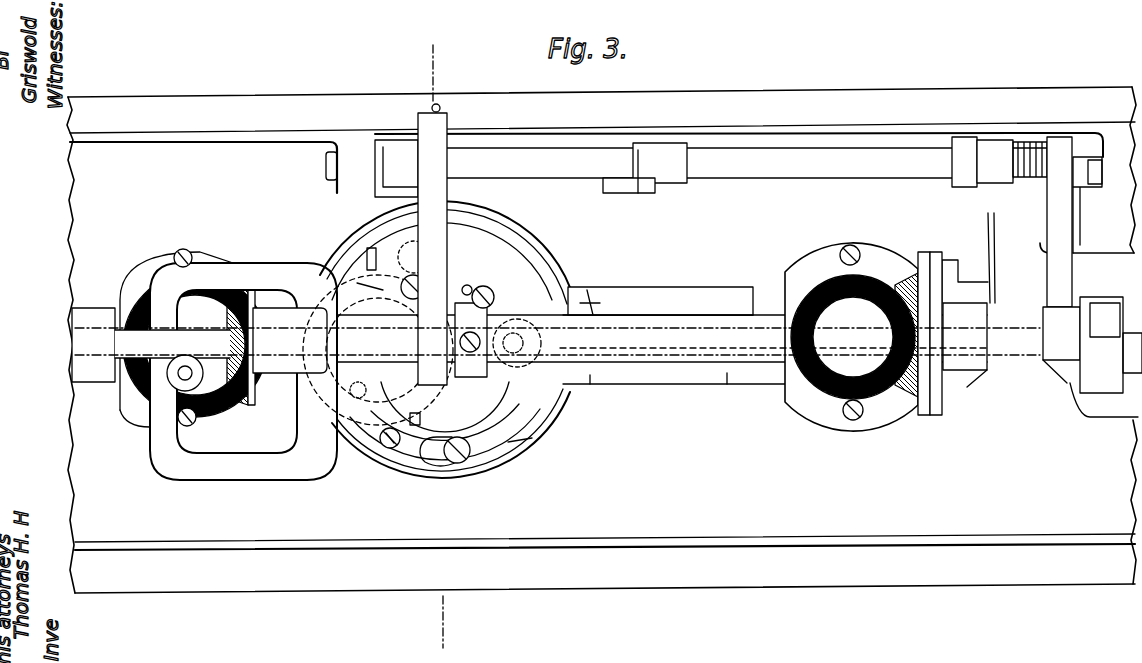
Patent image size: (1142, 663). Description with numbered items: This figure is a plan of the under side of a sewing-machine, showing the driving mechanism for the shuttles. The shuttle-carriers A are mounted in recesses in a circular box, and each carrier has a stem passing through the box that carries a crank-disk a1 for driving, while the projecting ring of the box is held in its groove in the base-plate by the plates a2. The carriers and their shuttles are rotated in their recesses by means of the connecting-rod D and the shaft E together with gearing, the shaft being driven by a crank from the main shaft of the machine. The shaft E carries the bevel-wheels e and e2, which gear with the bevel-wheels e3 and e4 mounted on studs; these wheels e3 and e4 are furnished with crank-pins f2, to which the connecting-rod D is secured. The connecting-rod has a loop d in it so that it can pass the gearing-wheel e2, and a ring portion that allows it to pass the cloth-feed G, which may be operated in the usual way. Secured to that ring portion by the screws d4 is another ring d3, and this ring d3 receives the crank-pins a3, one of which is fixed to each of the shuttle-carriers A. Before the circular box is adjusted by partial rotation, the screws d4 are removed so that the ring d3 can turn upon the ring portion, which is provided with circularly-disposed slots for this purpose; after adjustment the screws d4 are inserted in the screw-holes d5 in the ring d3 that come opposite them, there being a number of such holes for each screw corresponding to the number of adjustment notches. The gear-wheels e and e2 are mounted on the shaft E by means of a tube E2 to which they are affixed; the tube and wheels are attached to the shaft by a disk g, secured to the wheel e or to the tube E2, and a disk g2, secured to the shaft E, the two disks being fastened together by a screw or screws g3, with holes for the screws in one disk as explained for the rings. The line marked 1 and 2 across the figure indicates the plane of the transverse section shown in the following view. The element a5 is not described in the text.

The section line 1 is at (441, 71).
The section line 2 is at (451, 622).
The cloth-feed G is at (432, 249).
The loop d is at (228, 364).
The ring d3 is at (443, 362).
The screws d4 is at (495, 300).
The screw-holes d5 is at (470, 287).
The crank-disk a1 is at (447, 233).
The plates a2 is at (548, 288).
The crank-pins a3 is at (455, 483).
The pin a5 is at (601, 302).
The shuttle-carriers A is at (425, 353).
The bevel-wheel e2 is at (254, 392).
The bevel-wheel e4 is at (195, 345).
The connecting-rod D is at (482, 356).
The crank-pins f2 is at (178, 378).
The shaft E is at (734, 357).
The tube E2 is at (655, 362).
The bevel-wheel e3 is at (851, 337).
The bevel-wheel e is at (913, 400).
The disk g is at (925, 416).
The disk g2 is at (943, 413).
The screws g3 is at (945, 285).